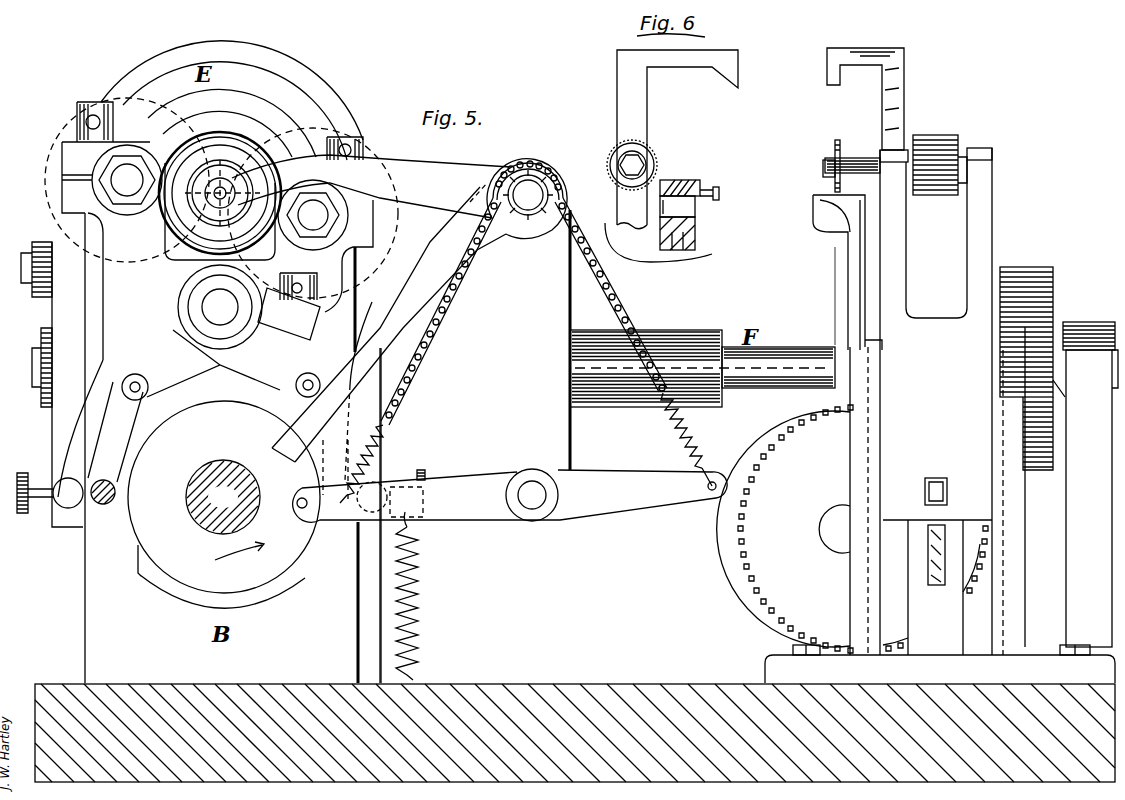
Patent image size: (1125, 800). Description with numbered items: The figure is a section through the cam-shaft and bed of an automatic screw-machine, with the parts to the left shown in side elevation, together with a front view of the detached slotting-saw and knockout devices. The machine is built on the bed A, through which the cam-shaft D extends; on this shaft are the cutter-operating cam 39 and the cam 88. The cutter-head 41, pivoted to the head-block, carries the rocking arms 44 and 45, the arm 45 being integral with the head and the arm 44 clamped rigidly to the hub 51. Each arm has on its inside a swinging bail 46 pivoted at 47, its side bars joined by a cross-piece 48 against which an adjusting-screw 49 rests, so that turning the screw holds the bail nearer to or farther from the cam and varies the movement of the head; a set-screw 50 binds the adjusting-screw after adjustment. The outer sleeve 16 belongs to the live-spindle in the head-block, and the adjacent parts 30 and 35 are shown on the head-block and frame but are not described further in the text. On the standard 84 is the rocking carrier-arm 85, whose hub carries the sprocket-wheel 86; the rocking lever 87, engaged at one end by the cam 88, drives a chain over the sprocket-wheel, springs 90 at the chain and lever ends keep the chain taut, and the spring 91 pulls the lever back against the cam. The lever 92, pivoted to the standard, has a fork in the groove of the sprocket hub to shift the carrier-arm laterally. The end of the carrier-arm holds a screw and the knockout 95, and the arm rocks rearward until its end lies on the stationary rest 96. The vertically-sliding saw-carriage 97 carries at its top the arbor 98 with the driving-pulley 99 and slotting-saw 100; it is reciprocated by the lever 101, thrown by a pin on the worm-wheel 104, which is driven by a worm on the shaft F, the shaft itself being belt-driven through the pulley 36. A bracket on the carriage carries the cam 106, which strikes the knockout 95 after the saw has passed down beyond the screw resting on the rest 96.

In FIG. 5, the outer sleeve 16 is at (232, 147).
In FIG. 5, the adjusting screws 30 is at (48, 324).
In FIG. 5, the frame standard 35 is at (1071, 484).
In FIG. 5, the pulley 36 is at (1053, 285).
In FIG. 5, the cutter-operating cam 39 is at (287, 461).
In FIG. 5, the cutter-head 41 is at (127, 186).
In FIG. 5, the rocking arm 44 is at (373, 409).
In FIG. 5, the rocking arm 45 is at (80, 428).
In FIG. 5, the swinging bail 46 is at (115, 432).
In FIG. 5, the pivot 47 is at (130, 374).
In FIG. 5, the cross-piece 48 is at (103, 487).
In FIG. 5, the adjusting-screw 49 is at (432, 468).
In FIG. 5, the set-screw 50 is at (390, 475).
In FIG. 5, the hub 51 is at (249, 307).
In FIG. 5, the standard 84 is at (311, 412).
In FIG. 5, the rocking carrier-arm 85 is at (369, 213).
In FIG. 6, the rocking carrier-arm 85 is at (682, 180).
In FIG. 5, the sprocket-wheel 86 is at (528, 215).
In FIG. 5, the rocking lever 87 is at (510, 495).
In FIG. 5, the cam 88 is at (440, 312).
In FIG. 5, the springs 90 is at (370, 462).
In FIG. 5, the spring 91 is at (418, 600).
In FIG. 5, the lever 92 is at (391, 515).
In FIG. 6, the knockout 95 is at (719, 193).
In FIG. 5, the stationary rest 96 is at (813, 225).
In FIG. 6, the stationary rest 96 is at (695, 228).
In FIG. 5, the saw-carriage 97 is at (940, 415).
In FIG. 5, the spindle or arbor 98 is at (862, 158).
In FIG. 5, the driving-pulley 99 is at (940, 165).
In FIG. 5, the slotting-saw 100 is at (835, 152).
In FIG. 6, the slotting-saw 100 is at (607, 165).
In FIG. 5, the lever 101 is at (925, 490).
In FIG. 5, the worm-wheel 104 is at (852, 529).
In FIG. 5, the cam 106 is at (827, 85).
In FIG. 6, the cam 106 is at (677, 139).
In FIG. 5, the bed A is at (575, 733).
In FIG. 5, the cam-shaft D is at (224, 504).
In FIG. 5, the shaft F is at (740, 360).